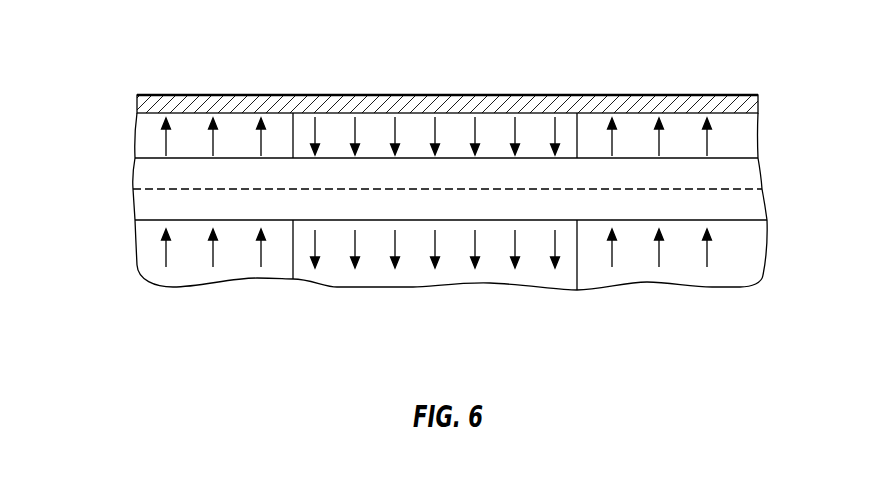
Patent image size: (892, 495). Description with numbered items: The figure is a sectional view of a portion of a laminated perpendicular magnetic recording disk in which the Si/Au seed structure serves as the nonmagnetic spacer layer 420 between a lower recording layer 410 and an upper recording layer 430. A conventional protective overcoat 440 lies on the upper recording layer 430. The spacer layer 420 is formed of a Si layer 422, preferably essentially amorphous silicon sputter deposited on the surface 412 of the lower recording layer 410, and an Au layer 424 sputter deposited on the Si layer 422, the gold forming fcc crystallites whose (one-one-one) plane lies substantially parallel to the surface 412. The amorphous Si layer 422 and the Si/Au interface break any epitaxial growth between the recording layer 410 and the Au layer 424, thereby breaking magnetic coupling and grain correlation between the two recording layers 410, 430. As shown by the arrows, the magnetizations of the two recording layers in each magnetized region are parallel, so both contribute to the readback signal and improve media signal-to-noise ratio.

The protective overcoat 440 is at (585, 95).
The upper recording layer 430 is at (750, 135).
The Au layer 424 is at (753, 177).
The Si layer 422 is at (760, 207).
The nonmagnetic spacer layer 420 is at (127, 158).
The surface of lower recording layer 412 is at (750, 219).
The lower recording layer 410 is at (758, 255).